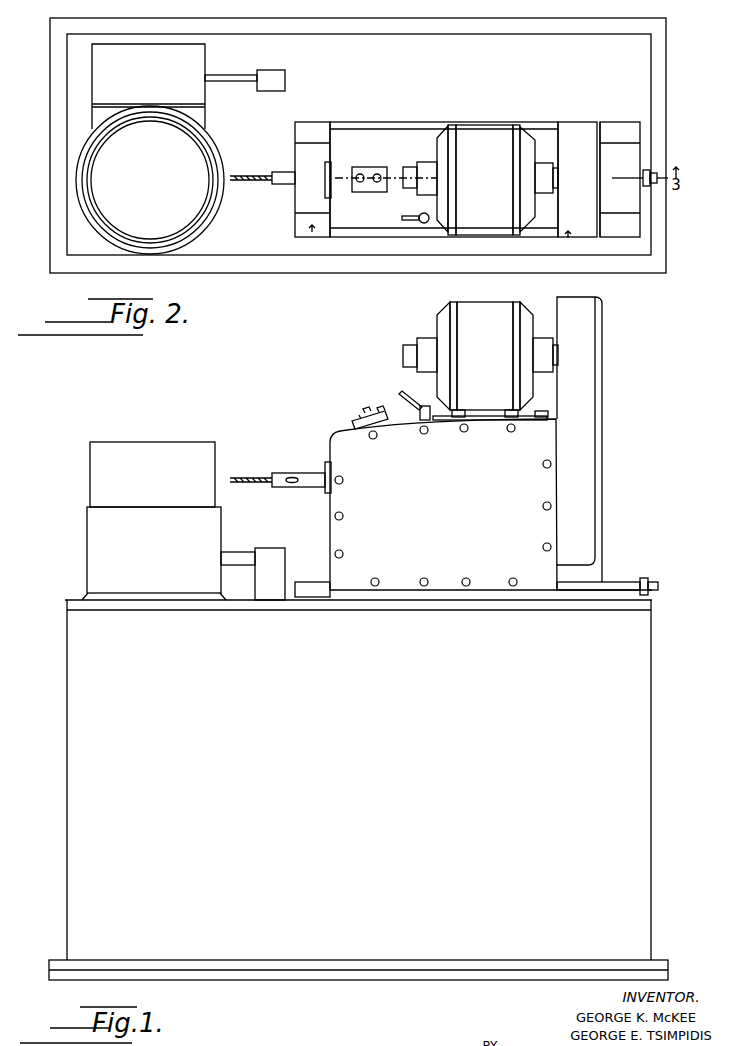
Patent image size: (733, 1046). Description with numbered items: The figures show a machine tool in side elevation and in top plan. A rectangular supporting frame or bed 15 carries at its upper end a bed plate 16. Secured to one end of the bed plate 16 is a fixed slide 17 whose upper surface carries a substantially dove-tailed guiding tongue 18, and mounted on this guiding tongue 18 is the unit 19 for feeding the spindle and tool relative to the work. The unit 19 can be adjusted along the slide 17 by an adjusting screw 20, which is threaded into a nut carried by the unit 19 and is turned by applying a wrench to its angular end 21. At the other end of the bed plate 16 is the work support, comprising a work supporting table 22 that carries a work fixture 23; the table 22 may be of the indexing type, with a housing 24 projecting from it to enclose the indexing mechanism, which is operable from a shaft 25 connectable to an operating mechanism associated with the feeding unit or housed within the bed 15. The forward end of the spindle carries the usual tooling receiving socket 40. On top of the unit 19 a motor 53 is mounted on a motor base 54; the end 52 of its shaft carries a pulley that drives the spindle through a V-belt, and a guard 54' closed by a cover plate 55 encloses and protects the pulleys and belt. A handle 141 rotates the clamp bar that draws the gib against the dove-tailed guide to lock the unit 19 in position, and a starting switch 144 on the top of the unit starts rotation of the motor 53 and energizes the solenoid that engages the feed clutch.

In FIG. 2, the supporting frame or bed 15 is at (660, 48).
In FIG. 1, the supporting frame or bed 15 is at (642, 688).
In FIG. 2, the bed plate 16 is at (638, 82).
In FIG. 1, the bed plate 16 is at (438, 601).
In FIG. 2, the fixed slide 17 is at (615, 145).
In FIG. 1, the fixed slide 17 is at (610, 593).
In FIG. 1, the guiding tongue 18 is at (608, 583).
In FIG. 2, the unit 19 is at (372, 145).
In FIG. 1, the unit 19 is at (345, 447).
In FIG. 2, the adjusting screw 20 is at (651, 176).
In FIG. 1, the adjusting screw 20 is at (648, 580).
In FIG. 2, the angular end 21 is at (652, 182).
In FIG. 1, the angular end 21 is at (656, 585).
In FIG. 2, the work supporting table 22 is at (200, 230).
In FIG. 1, the work supporting table 22 is at (95, 537).
In FIG. 2, the work fixture 23 is at (190, 152).
In FIG. 1, the work fixture 23 is at (195, 448).
In FIG. 2, the housing 24 is at (208, 55).
In FIG. 2, the shaft 25 is at (232, 88).
In FIG. 1, the shaft 25 is at (243, 558).
In FIG. 2, the tooling receiving socket 40 is at (285, 186).
In FIG. 1, the tooling receiving socket 40 is at (305, 487).
In FIG. 2, the end of motor shaft 52 is at (557, 186).
In FIG. 1, the end of motor shaft 52 is at (556, 362).
In FIG. 2, the motor 53 is at (480, 135).
In FIG. 1, the motor 53 is at (492, 318).
In FIG. 1, the motor base 54 is at (545, 403).
In FIG. 2, the guard 54' is at (579, 166).
In FIG. 1, the guard 54' is at (579, 431).
In FIG. 2, the cover plate 55 is at (596, 160).
In FIG. 1, the cover plate 55 is at (603, 315).
In FIG. 2, the handle 141 is at (421, 214).
In FIG. 1, the handle 141 is at (427, 405).
In FIG. 2, the starting switch 144 is at (382, 192).
In FIG. 1, the starting switch 144 is at (368, 417).